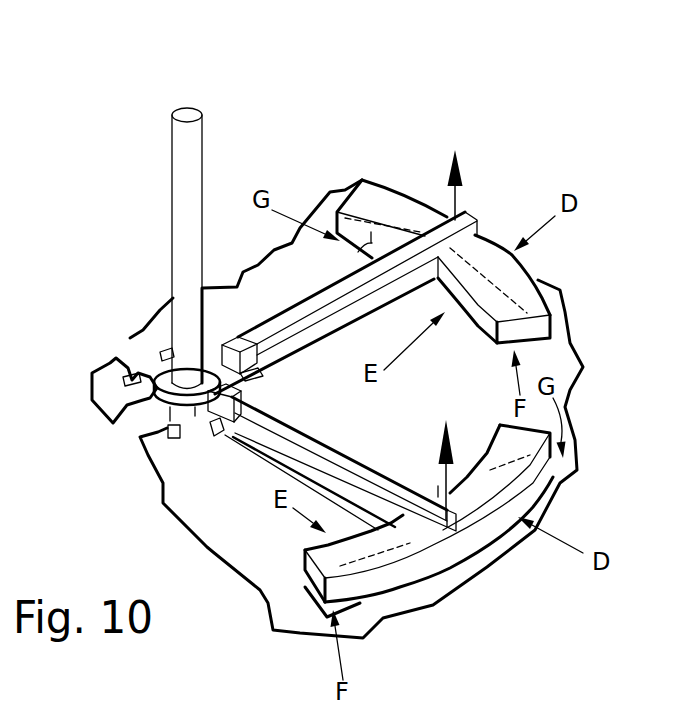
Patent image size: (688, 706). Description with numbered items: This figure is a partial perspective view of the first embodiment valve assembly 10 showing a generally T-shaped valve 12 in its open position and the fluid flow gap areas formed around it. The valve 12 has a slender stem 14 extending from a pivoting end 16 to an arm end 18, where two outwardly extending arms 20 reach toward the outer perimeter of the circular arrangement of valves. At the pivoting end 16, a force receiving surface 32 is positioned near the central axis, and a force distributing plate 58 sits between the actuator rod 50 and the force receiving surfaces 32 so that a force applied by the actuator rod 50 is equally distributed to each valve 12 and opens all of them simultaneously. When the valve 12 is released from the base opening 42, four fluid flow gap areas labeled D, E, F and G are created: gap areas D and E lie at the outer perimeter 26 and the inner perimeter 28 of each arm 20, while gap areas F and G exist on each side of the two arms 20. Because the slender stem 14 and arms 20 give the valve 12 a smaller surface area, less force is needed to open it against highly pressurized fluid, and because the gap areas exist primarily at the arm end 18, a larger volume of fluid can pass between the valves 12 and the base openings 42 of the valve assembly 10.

The valve assembly 10 is at (348, 81).
The generally T-shaped valve 12 is at (483, 263).
The slender stem 14 is at (310, 443).
The pivoting end 16 is at (240, 337).
The arm end 18 is at (463, 210).
The arm 20 is at (512, 462).
The outer perimeter 26 is at (406, 185).
The inner perimeter 28 is at (358, 250).
The force receiving surface 32 is at (242, 372).
The base opening 42 is at (475, 332).
The actuator rod 50 is at (190, 200).
The force distributing plate 58 is at (170, 375).